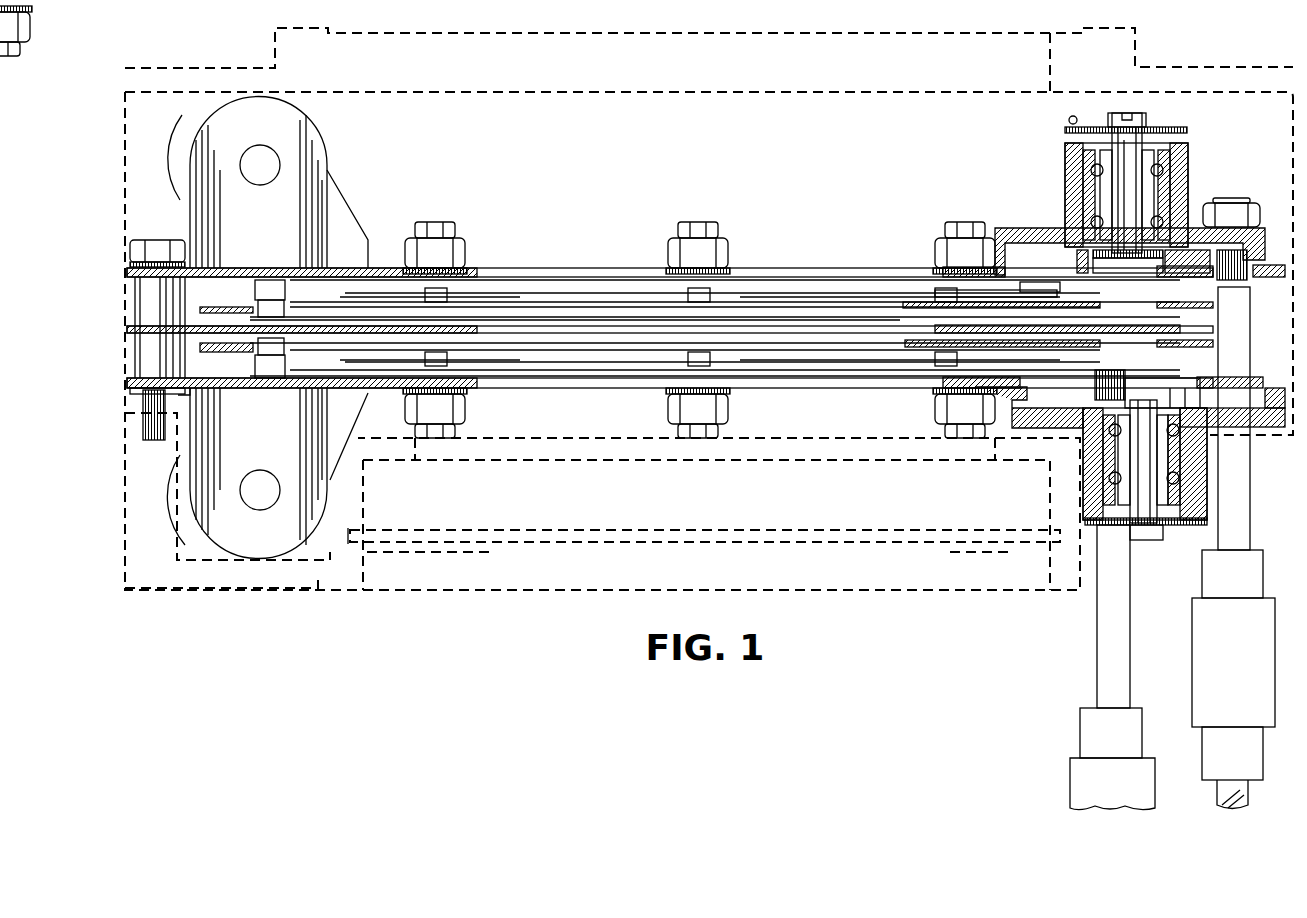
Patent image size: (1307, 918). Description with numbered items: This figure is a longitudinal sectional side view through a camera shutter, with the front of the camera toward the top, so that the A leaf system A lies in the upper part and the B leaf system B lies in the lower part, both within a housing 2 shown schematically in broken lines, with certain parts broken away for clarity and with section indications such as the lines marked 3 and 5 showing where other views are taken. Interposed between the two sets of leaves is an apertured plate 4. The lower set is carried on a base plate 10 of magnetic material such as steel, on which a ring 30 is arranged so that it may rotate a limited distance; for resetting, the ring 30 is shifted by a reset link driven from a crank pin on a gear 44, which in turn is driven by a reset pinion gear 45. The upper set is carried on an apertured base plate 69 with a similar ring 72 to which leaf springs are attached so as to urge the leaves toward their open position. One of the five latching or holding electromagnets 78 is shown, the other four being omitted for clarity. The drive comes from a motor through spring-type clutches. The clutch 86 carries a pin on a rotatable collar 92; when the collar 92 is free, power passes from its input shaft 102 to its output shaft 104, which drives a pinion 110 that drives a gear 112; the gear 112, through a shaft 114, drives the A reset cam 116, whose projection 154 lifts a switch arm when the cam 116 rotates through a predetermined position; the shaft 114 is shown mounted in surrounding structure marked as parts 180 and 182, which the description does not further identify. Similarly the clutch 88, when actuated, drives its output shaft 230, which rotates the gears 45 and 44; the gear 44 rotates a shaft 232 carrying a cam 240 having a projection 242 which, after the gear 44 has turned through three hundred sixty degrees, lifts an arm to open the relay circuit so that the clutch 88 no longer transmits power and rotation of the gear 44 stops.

The housing 2 is at (262, 62).
The section line 3- 3 is at (460, 550).
The apertured plate 4 is at (463, 325).
The section line 5- 5 is at (188, 320).
The base plate 10 is at (338, 388).
The ring 30 is at (235, 355).
The gear 44 is at (1170, 388).
The reset pinion gear 45 is at (1125, 378).
The apertured base plate 69 is at (380, 268).
The ring 72 is at (915, 272).
The electromagnet 78 is at (322, 158).
The clutch 86 is at (1190, 642).
The clutch 88 is at (1076, 722).
The rotatable collar 92 is at (1215, 686).
The input shaft 102 is at (1240, 802).
The output shaft 104 is at (1250, 540).
The pinion 110 is at (1245, 272).
The gear 112 is at (1245, 240).
The shaft 114 is at (1188, 182).
The A reset cam 116 is at (1183, 127).
The projection 154 is at (1068, 120).
The bearing housing 180 is at (1190, 150).
The shaft bore 182 is at (1132, 203).
The output shaft 230 is at (1115, 648).
The shaft 232 is at (1145, 455).
The cam 240 is at (1165, 540).
The projection 242 is at (1195, 527).
The A leaf system A is at (762, 280).
The B leaf system B is at (790, 372).